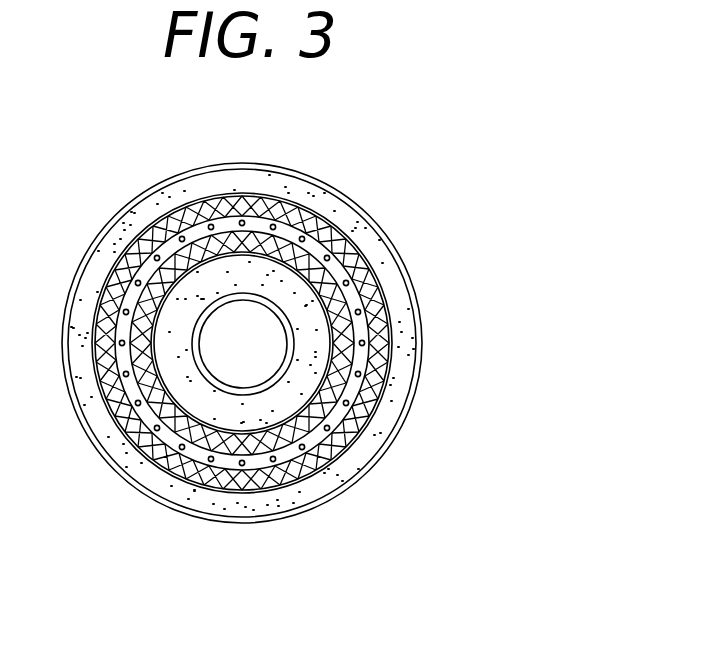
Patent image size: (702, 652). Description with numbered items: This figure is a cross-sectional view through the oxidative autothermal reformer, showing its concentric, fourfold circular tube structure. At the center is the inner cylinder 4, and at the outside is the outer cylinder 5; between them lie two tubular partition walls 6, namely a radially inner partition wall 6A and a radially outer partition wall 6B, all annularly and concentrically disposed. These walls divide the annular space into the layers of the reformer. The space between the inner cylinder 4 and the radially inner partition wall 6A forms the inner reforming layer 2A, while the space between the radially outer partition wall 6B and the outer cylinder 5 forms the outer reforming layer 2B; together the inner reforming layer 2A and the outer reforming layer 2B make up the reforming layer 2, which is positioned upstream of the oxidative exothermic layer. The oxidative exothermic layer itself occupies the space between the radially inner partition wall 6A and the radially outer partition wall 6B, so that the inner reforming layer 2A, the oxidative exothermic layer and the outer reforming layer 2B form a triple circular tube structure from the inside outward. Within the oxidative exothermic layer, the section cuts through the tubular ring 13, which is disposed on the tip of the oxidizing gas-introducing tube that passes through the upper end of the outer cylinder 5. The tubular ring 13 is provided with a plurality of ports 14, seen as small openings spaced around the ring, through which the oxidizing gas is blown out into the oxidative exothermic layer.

The reforming layer 2 is at (314, 339).
The inner reforming layer 2A is at (347, 248).
The outer reforming layer 2B is at (512, 168).
The inner cylinder 4 is at (285, 330).
The outer cylinder 5 is at (324, 192).
The tubular partition walls 6 is at (314, 380).
The radially inner partition wall 6A is at (338, 415).
The radially outer partition wall 6B is at (347, 457).
The tubular ring 13 is at (170, 442).
The ports 14 is at (241, 465).